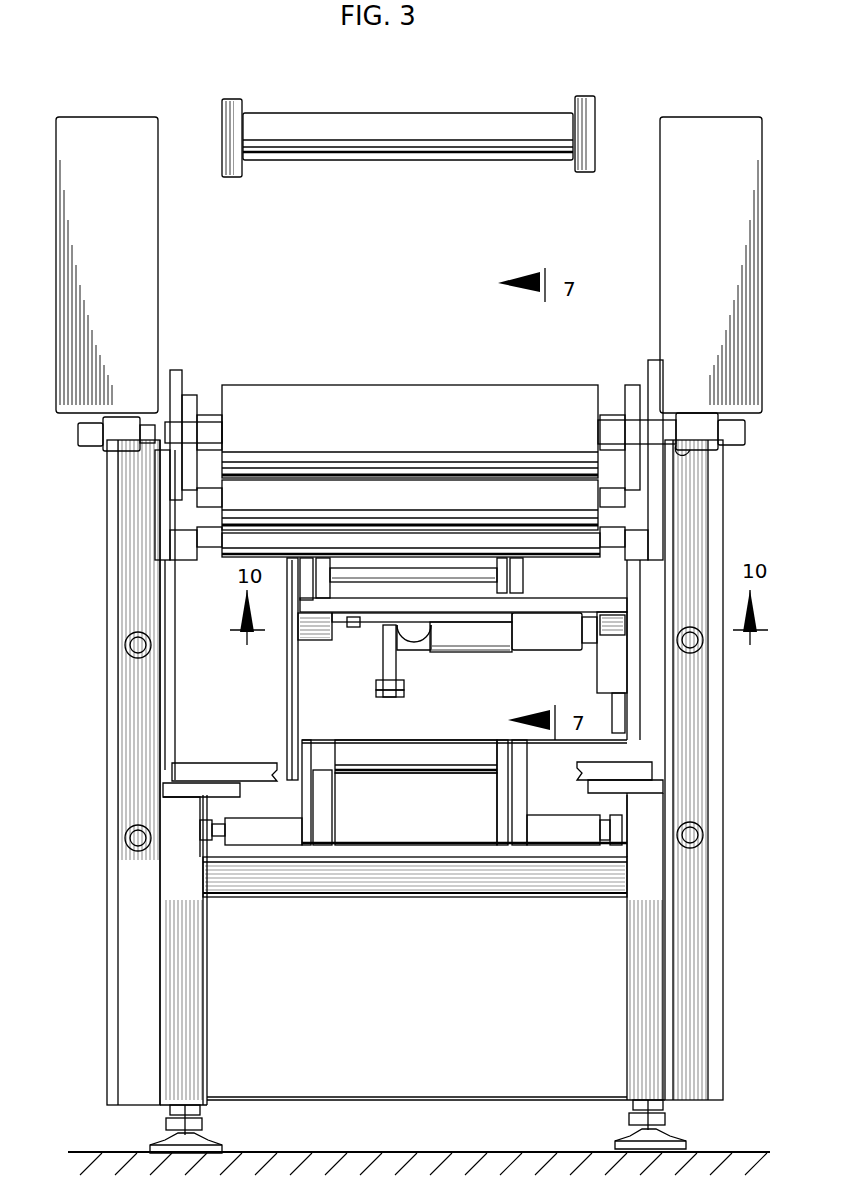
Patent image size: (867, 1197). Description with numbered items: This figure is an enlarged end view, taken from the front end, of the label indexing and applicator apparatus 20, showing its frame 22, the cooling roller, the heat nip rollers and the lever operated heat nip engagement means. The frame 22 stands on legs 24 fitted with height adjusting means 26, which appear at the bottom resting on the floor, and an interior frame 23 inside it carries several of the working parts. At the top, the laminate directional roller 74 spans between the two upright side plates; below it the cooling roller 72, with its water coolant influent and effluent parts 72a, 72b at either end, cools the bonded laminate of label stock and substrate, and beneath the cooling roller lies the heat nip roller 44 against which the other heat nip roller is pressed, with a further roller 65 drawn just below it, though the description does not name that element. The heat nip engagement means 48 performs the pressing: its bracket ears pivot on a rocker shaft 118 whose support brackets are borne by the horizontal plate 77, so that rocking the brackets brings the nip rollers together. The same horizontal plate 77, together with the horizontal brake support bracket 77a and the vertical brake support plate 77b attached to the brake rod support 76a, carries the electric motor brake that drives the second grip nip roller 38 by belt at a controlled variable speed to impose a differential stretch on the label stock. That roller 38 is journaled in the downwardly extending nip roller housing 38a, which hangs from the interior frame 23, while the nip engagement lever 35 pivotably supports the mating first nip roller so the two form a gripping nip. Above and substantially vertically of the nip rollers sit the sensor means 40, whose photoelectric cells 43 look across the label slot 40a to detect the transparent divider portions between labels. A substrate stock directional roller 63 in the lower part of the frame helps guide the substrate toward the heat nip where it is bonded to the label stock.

The label indexing and applicator apparatus 20 is at (336, 345).
The frame 22 is at (124, 692).
The interior frame 23 is at (287, 682).
The legs 24 is at (193, 985).
The height adjusting means 26 is at (200, 1123).
The nip engagement lever 35 is at (328, 790).
The second grip nip roller 38 is at (415, 764).
The nip roller housing 38a is at (520, 796).
The sensor means 40 is at (503, 638).
The label slot 40a is at (615, 626).
The photoelectric cells 43 is at (412, 640).
The heat nip roller 44 is at (385, 501).
The heat nip engagement means 48 is at (527, 580).
The substrate stock directional roller 63 is at (280, 830).
The roller 65 is at (473, 545).
The cooling roller 72 is at (404, 424).
The water coolant influent part 72a is at (92, 440).
The water coolant effluent part 72b is at (729, 436).
The laminate directional roller 74 is at (420, 128).
The brake rod support 76a is at (385, 698).
The horizontal plate 77 is at (568, 600).
The horizontal brake support bracket 77a is at (355, 627).
The vertical brake support plate 77b is at (385, 665).
The rocker shaft 118 is at (365, 578).